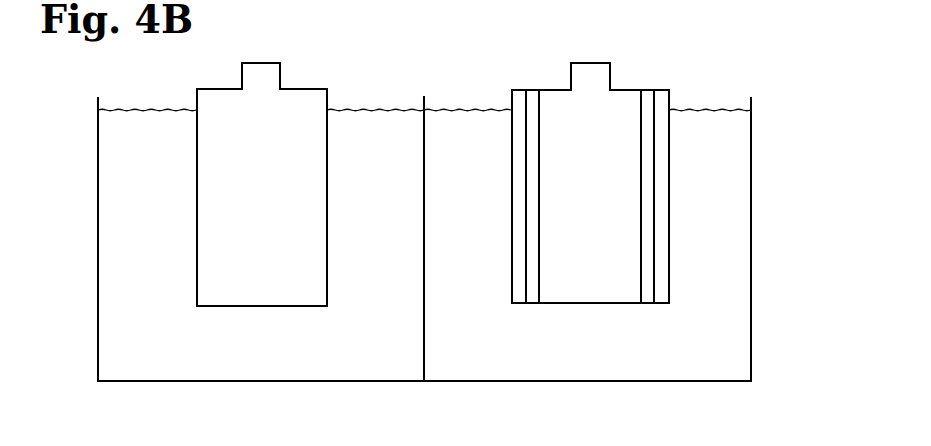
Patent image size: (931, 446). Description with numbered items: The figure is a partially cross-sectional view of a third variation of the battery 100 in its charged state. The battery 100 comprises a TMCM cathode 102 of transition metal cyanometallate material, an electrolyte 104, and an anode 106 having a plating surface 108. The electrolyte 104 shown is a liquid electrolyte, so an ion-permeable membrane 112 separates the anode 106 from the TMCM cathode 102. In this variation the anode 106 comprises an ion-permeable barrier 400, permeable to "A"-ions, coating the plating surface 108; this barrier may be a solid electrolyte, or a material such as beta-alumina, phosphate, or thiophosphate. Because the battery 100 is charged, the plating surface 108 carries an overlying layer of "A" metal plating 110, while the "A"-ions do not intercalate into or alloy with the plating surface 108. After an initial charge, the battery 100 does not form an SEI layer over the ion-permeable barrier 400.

The battery 100 is at (592, 27).
The TMCM cathode 102 is at (243, 238).
The electrolyte 104 is at (285, 367).
The anode 106 is at (711, 51).
The plating surface 108 is at (538, 200).
The "A" metal plating 110 is at (528, 89).
The ion-permeable membrane 112 is at (424, 363).
The ion-permeable barrier 400 is at (513, 89).